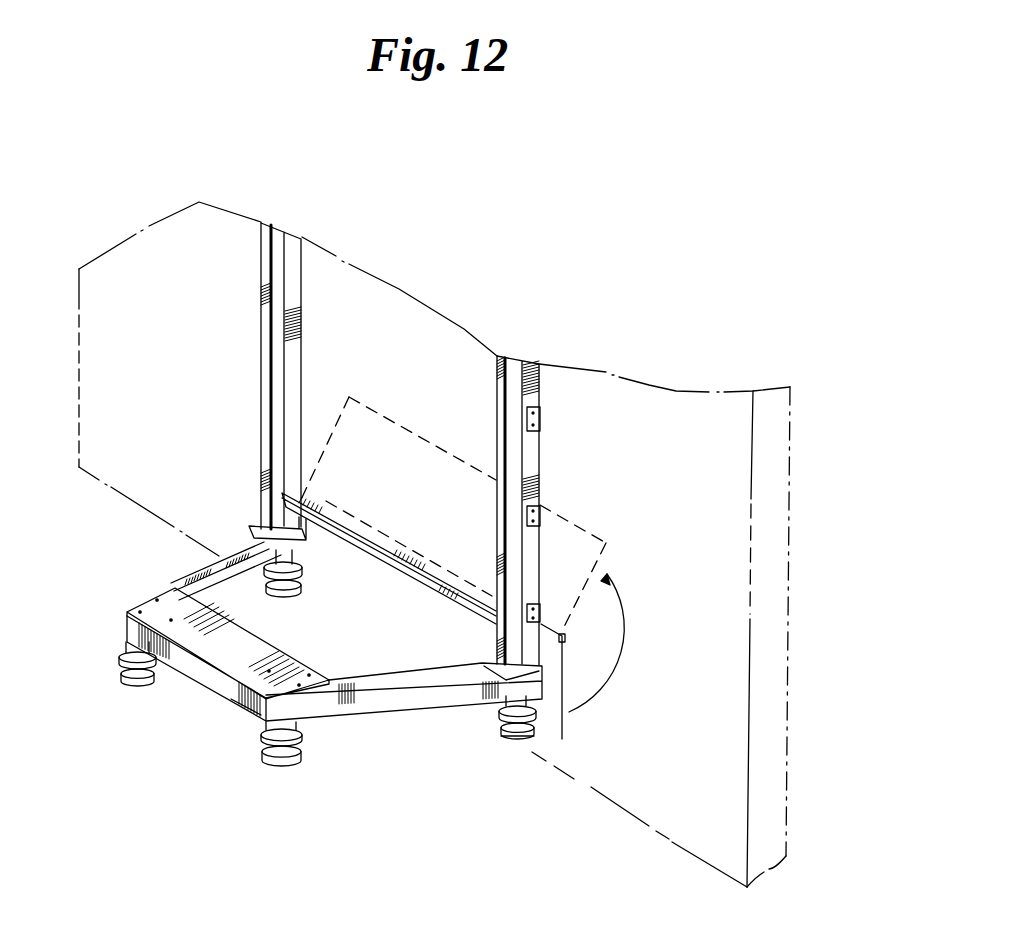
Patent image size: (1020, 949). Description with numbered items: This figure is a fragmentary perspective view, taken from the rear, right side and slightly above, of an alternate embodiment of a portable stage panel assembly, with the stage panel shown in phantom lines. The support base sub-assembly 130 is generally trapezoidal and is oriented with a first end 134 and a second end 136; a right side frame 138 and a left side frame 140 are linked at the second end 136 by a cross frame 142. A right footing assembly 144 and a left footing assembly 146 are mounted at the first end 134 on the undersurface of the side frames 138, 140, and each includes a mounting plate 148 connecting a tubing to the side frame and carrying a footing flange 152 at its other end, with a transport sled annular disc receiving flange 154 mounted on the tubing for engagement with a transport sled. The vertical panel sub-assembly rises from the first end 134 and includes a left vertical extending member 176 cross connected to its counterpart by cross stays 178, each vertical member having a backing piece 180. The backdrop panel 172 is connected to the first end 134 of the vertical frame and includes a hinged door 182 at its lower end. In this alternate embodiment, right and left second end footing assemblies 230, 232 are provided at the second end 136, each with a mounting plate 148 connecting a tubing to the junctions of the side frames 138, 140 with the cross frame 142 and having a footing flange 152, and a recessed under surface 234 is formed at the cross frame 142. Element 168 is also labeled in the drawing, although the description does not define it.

The support base sub-assembly 130 is at (284, 689).
The first end 134 is at (547, 678).
The second end 136 is at (188, 678).
The right side frame 138 is at (410, 708).
The left side frame 140 is at (198, 576).
The cross frame 142 is at (261, 775).
The right footing assembly 144 is at (519, 758).
The left footing assembly 146 is at (303, 558).
The mounting plate 148 is at (543, 720).
The footing flange 152 is at (517, 748).
The transport sled annular disc receiving flange 154 is at (534, 750).
The top plate 168 is at (143, 607).
The backdrop panel 172 is at (792, 425).
The left vertical extending member 176 is at (297, 372).
The cross stays 178 is at (337, 538).
The backing piece 180 is at (262, 388).
The hinged door 182 is at (607, 544).
The right second end footing assembly 230 is at (303, 758).
The left second end footing assembly 232 is at (112, 688).
The recessed under surface 234 is at (240, 705).